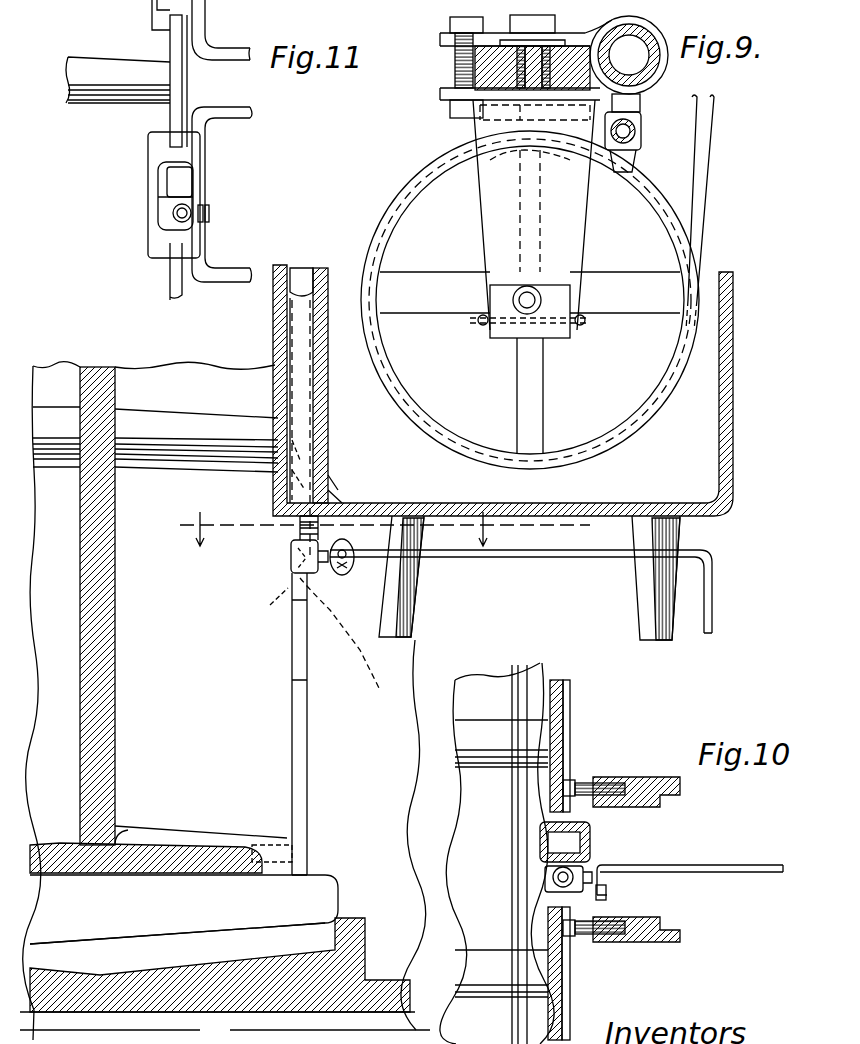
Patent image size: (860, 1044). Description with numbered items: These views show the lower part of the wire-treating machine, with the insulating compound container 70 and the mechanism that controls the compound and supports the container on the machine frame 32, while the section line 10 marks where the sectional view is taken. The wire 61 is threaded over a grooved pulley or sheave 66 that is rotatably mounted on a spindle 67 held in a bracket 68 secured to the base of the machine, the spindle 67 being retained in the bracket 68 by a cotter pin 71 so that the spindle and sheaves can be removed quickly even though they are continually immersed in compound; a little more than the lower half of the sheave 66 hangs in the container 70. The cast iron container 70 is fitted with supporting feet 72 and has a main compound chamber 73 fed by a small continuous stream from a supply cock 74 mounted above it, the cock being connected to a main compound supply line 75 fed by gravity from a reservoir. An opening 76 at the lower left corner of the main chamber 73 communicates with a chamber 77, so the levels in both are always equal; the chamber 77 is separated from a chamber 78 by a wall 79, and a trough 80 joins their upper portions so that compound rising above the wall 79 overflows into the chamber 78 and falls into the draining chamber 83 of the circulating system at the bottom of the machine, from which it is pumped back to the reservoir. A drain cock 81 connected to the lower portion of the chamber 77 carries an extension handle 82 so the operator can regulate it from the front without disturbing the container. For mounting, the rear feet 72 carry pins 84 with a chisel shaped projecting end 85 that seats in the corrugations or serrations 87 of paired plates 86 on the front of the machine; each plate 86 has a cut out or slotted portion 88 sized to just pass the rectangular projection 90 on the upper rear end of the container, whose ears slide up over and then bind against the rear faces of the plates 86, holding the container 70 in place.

In FIG. 9, the section line 10 is at (373, 529).
In FIG. 9, the machine frame 32 is at (105, 742).
In FIG. 10, the machine frame 32 is at (497, 853).
In FIG. 9, the wire 61 is at (712, 118).
In FIG. 9, the grooved pulley or sheave 66 is at (668, 218).
In FIG. 9, the spindle 67 is at (527, 306).
In FIG. 9, the bracket 68 is at (497, 236).
In FIG. 9, the insulating compound container 70 is at (733, 318).
In FIG. 11, the insulating compound container 70 is at (118, 80).
In FIG. 9, the cotter pin 71 is at (582, 326).
In FIG. 9, the supporting feet 72 is at (413, 592).
In FIG. 10, the supporting feet 72 is at (680, 800).
In FIG. 9, the main compound chamber 73 is at (690, 432).
In FIG. 11, the main compound chamber 73 is at (230, 243).
In FIG. 9, the supply cock 74 is at (641, 131).
In FIG. 9, the main compound supply line 75 is at (635, 70).
In FIG. 9, the opening 76 is at (332, 500).
In FIG. 11, the opening 76 is at (210, 216).
In FIG. 9, the chamber 77 is at (300, 355).
In FIG. 11, the chamber 77 is at (172, 213).
In FIG. 11, the chamber 78 is at (180, 178).
In FIG. 9, the wall 79 is at (300, 322).
In FIG. 11, the wall 79 is at (187, 195).
In FIG. 9, the trough 80 is at (312, 266).
In FIG. 9, the drain cock 81 is at (290, 560).
In FIG. 10, the drain cock 81 is at (550, 890).
In FIG. 11, the drain cock 81 is at (178, 218).
In FIG. 9, the extension handle 82 is at (712, 581).
In FIG. 10, the extension handle 82 is at (737, 872).
In FIG. 9, the draining chamber 83 is at (280, 880).
In FIG. 9, the pin 84 is at (340, 575).
In FIG. 10, the pin 84 is at (595, 780).
In FIG. 10, the chisel shaped projecting end 85 is at (572, 780).
In FIG. 9, the plate 86 is at (307, 722).
In FIG. 10, the plate 86 is at (555, 680).
In FIG. 11, the plate 86 is at (185, 78).
In FIG. 9, the corrugations or serrations 87 is at (309, 634).
In FIG. 10, the corrugations or serrations 87 is at (560, 718).
In FIG. 9, the cut out or slotted portion 88 is at (307, 650).
In FIG. 9, the rectangular projection 90 is at (292, 268).
In FIG. 11, the rectangular projection 90 is at (152, 18).